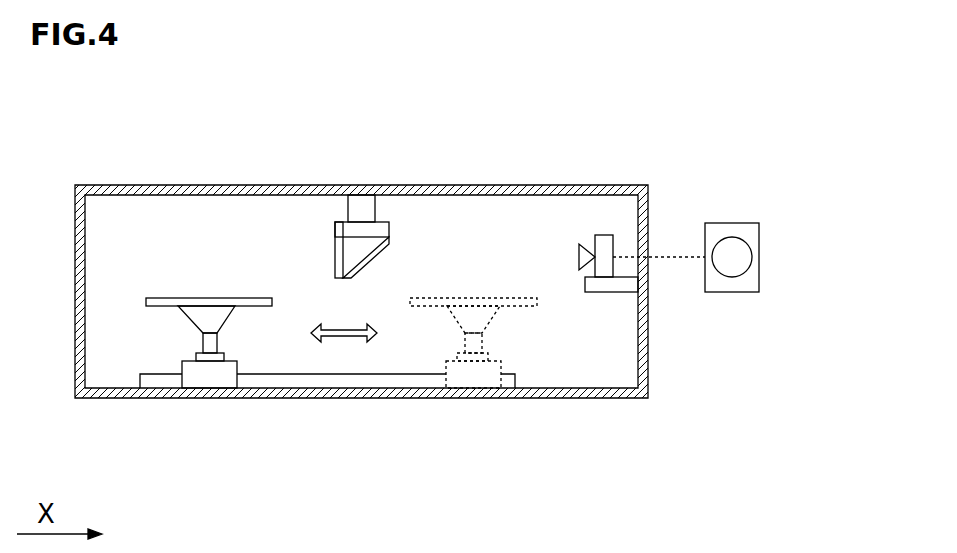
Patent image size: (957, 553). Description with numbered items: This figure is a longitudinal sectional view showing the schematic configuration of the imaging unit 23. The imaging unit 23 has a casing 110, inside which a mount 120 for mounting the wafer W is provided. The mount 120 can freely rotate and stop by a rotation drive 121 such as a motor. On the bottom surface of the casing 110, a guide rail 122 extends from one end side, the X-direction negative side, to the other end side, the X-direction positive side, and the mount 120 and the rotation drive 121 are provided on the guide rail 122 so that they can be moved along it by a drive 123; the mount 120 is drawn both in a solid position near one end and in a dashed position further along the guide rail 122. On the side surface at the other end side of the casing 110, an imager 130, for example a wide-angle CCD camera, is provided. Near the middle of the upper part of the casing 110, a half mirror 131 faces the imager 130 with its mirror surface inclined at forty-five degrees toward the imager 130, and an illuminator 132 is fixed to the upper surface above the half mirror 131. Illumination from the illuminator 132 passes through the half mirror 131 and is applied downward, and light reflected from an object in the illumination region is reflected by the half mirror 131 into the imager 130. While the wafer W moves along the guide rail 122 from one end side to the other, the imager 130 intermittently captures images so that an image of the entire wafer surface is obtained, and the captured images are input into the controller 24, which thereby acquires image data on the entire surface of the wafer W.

The imaging unit 23 is at (220, 138).
The casing 110 is at (128, 190).
The mount 120 is at (230, 313).
The rotation drive 121 is at (206, 359).
The guide rail 122 is at (338, 380).
The drive 123 is at (200, 380).
The imager 130 is at (580, 243).
The half mirror 131 is at (367, 257).
The illuminator 132 is at (352, 231).
The controller 24 is at (759, 255).
The wafer W is at (262, 297).